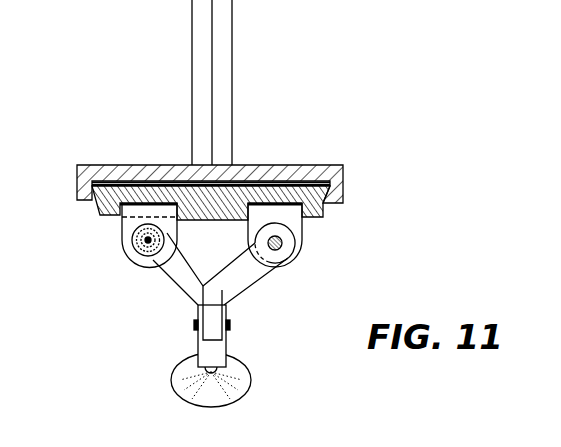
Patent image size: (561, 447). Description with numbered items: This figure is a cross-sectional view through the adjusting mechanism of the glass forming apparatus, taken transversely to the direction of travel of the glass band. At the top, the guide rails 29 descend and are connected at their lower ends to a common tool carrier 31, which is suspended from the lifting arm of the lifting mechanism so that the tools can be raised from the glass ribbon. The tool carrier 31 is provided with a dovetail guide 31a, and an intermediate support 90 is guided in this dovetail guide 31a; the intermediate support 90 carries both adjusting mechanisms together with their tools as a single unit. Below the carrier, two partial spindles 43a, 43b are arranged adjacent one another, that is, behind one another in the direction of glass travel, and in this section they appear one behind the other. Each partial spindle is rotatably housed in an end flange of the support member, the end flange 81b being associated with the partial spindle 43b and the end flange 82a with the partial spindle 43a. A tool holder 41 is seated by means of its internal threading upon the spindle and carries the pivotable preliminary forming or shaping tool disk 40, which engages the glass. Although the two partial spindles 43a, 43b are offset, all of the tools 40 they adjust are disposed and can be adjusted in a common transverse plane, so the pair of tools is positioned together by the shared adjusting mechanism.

The guide rail 29 is at (222, 113).
The tool carrier 31 is at (113, 163).
The dovetail guide 31a is at (343, 192).
The intermediate support 90 is at (162, 186).
The end flange 81b is at (128, 227).
The end flange 82a is at (298, 232).
The partial spindle 43b is at (146, 246).
The partial spindle 43a is at (278, 248).
The preliminary forming tool disk 40 is at (187, 283).
The tool holder 41 is at (238, 283).